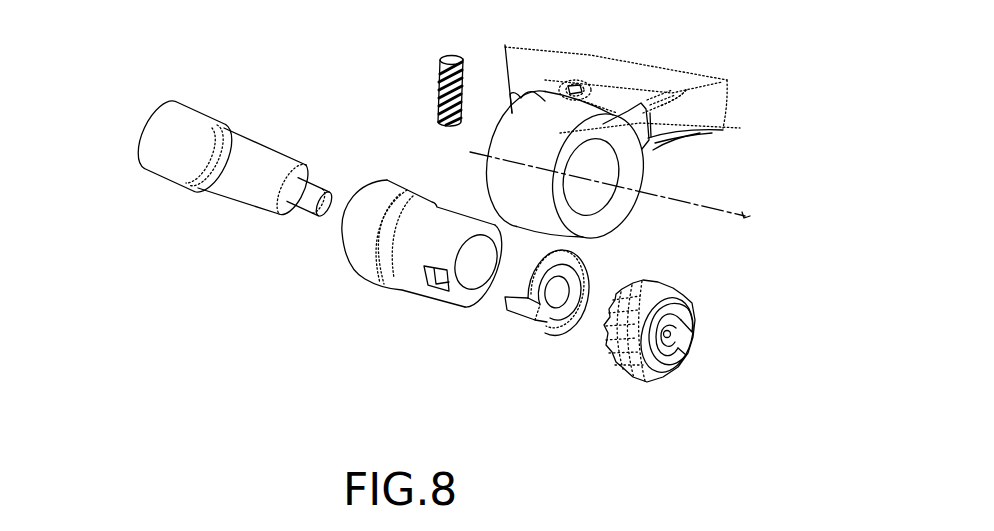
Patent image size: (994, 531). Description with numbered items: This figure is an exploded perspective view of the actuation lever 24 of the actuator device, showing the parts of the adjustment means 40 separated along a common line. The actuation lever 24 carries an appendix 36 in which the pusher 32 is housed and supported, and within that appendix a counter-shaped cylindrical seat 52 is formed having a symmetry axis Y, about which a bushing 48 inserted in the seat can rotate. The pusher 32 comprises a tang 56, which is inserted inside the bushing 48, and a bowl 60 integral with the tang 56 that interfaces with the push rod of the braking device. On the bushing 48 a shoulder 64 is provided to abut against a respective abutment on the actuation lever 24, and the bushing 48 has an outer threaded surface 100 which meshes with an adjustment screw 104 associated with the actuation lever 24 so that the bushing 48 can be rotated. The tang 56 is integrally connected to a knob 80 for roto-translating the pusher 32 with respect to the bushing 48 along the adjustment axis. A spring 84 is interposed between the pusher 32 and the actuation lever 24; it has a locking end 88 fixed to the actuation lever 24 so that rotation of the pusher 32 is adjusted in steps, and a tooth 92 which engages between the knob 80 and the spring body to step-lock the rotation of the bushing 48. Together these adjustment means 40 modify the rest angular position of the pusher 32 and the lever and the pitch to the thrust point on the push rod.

The actuation lever 24 is at (686, 90).
The pusher 32 is at (190, 119).
The appendix 36 is at (660, 156).
The adjustment means 40 is at (275, 196).
The bushing 48 is at (329, 240).
The cylindrical seat 52 is at (593, 197).
The tang 56 is at (237, 167).
The bowl 60 is at (152, 143).
The shoulder 64 is at (410, 190).
The knob 80 is at (687, 300).
The spring 84 is at (510, 351).
The locking end 88 is at (500, 297).
The tooth 92 is at (577, 322).
The outer threaded surface 100 is at (418, 287).
The adjustment screw 104 is at (440, 73).
The symmetry axis Y is at (744, 214).